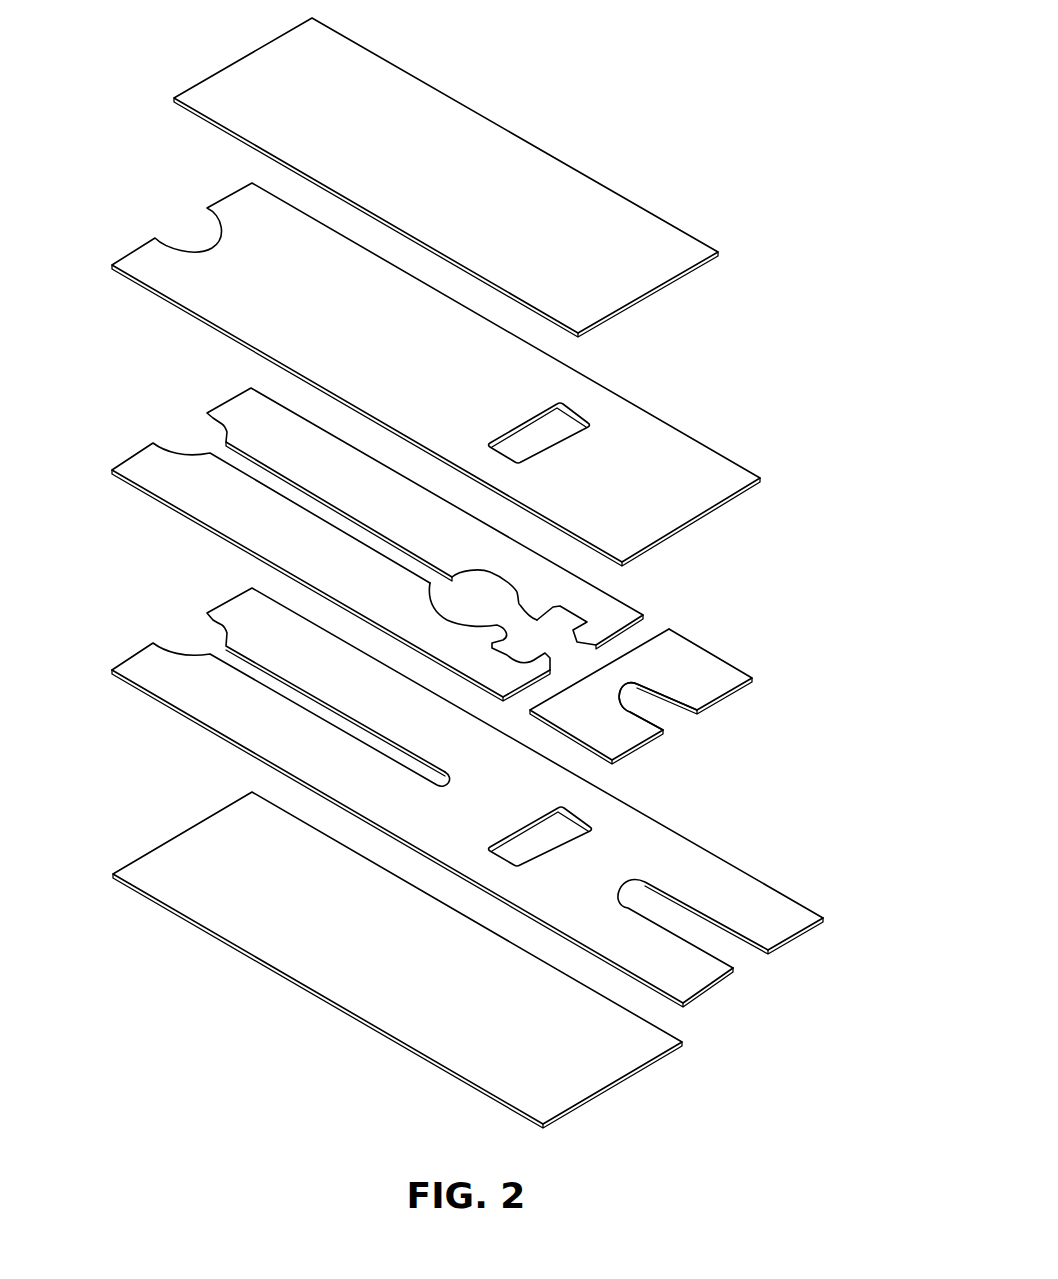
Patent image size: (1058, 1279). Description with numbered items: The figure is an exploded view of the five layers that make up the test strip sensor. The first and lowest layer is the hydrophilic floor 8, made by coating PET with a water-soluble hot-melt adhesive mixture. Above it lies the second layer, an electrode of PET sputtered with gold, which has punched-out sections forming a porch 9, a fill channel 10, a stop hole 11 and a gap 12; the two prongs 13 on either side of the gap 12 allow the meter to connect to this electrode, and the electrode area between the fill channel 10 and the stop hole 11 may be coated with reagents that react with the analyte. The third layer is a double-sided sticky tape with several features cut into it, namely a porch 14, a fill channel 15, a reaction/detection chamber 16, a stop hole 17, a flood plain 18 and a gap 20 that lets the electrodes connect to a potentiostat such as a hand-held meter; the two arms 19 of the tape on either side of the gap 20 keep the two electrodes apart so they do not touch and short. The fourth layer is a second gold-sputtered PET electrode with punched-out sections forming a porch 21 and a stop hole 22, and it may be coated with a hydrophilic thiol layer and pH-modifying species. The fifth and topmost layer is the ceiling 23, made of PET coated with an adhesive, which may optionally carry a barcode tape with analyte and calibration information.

The hydrophilic floor 8 is at (577, 1068).
The porch 9 is at (200, 637).
The fill channel 10 is at (297, 696).
The stop hole 11 is at (545, 835).
The gap 12 is at (667, 910).
The prongs 13 is at (777, 920).
The porch 14 is at (183, 435).
The fill channel 15 is at (307, 496).
The reaction/detection chamber 16 is at (480, 600).
The stop hole 17 is at (540, 635).
The flood plain 18 is at (580, 665).
The arms of the double-sided sticky tape 19 is at (708, 677).
The gap 20 is at (658, 707).
The porch 21 is at (193, 230).
The stop hole 22 is at (543, 432).
The ceiling 23 is at (647, 240).